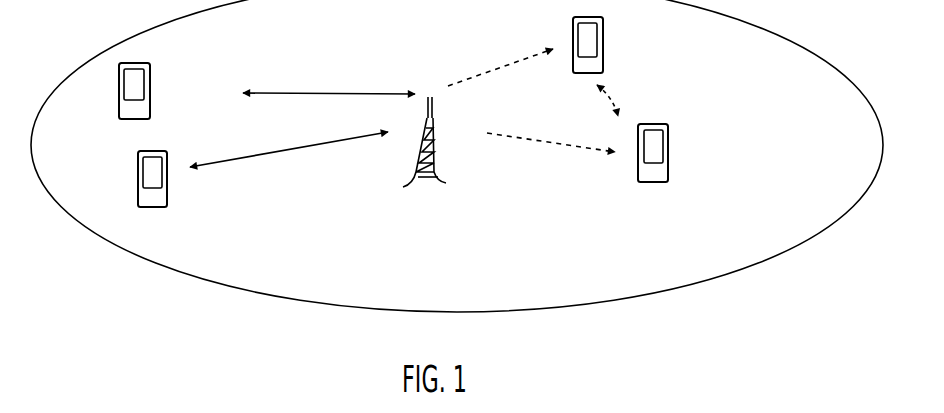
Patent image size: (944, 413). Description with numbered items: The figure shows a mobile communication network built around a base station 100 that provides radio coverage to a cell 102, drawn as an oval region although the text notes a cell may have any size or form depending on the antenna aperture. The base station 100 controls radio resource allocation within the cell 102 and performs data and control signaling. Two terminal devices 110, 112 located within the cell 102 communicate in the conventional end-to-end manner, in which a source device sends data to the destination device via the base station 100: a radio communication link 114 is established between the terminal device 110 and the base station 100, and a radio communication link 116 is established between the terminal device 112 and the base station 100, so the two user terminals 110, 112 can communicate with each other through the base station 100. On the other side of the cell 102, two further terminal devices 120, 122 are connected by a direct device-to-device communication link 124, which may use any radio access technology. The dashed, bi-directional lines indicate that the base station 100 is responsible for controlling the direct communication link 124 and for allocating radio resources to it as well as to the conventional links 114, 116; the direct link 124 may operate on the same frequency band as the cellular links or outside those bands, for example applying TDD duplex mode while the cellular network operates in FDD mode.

The base station 100 is at (446, 171).
The cell 102 is at (254, 58).
The terminal device 110 is at (167, 186).
The terminal device 112 is at (150, 97).
The radio communication link 114 is at (291, 149).
The radio communication link 116 is at (328, 93).
The terminal device 120 is at (668, 162).
The terminal device 122 is at (603, 55).
The direct communication link 124 is at (608, 101).